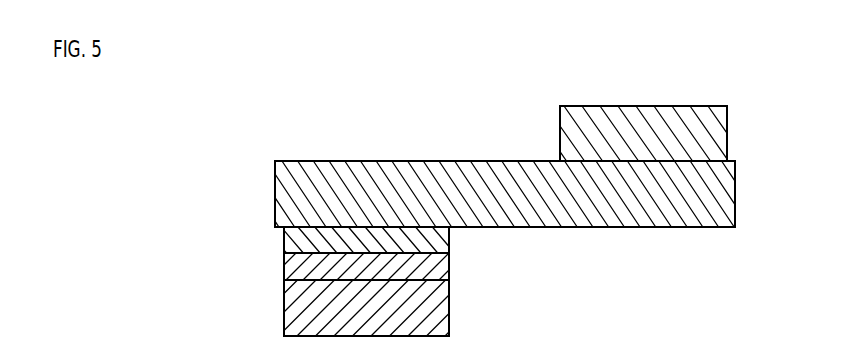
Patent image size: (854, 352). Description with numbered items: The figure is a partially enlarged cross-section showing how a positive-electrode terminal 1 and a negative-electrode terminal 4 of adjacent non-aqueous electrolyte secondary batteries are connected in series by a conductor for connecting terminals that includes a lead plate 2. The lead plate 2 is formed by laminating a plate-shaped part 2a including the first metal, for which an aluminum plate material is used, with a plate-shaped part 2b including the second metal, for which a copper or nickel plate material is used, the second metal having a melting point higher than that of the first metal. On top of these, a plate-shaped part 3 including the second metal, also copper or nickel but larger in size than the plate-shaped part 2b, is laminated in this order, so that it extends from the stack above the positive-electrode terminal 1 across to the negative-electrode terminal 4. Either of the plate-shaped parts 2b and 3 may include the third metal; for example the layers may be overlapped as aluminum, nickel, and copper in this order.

The positive-electrode terminal 1 is at (320, 312).
The lead plate 2 is at (315, 252).
The plate-shaped part including the first metal 2a is at (303, 268).
The plate-shaped part including the second metal 2b is at (303, 240).
The plate-shaped part including the second metal 3 is at (495, 178).
The negative-electrode terminal 4 is at (682, 137).